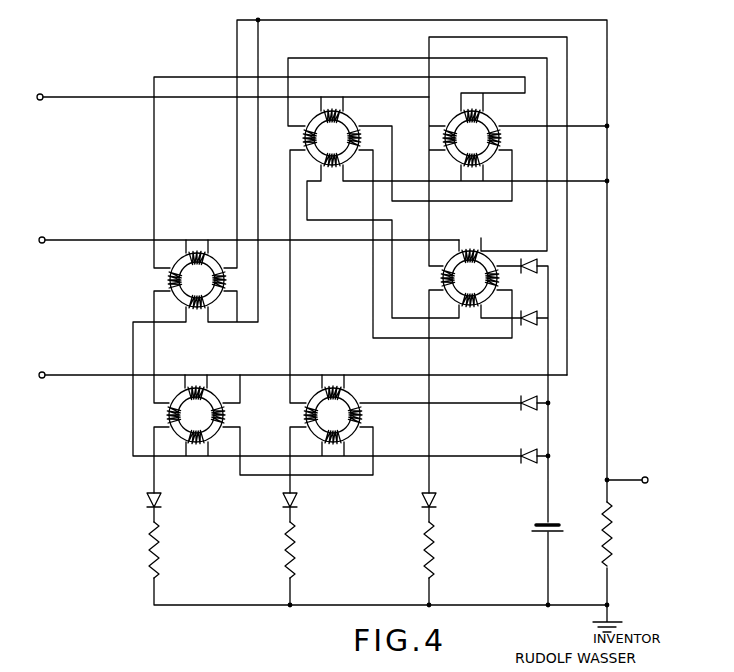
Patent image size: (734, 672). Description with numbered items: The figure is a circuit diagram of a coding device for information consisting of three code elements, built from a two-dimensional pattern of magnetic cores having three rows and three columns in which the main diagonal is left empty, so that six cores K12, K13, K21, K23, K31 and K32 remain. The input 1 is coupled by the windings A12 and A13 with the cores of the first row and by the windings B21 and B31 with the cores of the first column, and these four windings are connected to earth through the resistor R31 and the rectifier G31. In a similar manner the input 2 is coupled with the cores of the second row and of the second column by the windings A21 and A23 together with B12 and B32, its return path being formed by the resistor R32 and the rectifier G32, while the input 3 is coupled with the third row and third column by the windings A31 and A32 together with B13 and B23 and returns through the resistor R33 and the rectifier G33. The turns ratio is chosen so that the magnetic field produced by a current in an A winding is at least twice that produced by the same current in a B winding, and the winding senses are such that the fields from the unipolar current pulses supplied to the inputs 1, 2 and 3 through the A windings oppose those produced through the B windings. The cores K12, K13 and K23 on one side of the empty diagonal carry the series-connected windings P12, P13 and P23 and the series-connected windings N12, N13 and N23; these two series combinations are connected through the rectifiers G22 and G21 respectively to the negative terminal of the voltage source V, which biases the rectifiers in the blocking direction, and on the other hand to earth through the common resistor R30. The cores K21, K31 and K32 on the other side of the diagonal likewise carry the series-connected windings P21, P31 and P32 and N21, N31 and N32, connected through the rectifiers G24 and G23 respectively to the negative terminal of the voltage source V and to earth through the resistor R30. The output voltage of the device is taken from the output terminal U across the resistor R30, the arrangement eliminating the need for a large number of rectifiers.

The input 1 is at (233, 88).
The input 2 is at (247, 230).
The input 3 is at (301, 367).
The output terminal U is at (646, 470).
The voltage source V is at (545, 530).
The core K12 is at (332, 138).
The winding A12 is at (332, 108).
The winding B12 is at (303, 137).
The winding N12 is at (361, 137).
The winding P12 is at (333, 167).
The core K13 is at (472, 138).
The winding A13 is at (472, 108).
The winding B13 is at (443, 137).
The winding N13 is at (501, 137).
The winding P13 is at (473, 167).
The core K21 is at (197, 280).
The winding A21 is at (197, 250).
The winding B21 is at (168, 279).
The winding N21 is at (226, 279).
The winding P21 is at (198, 309).
The core K23 is at (470, 278).
The winding A23 is at (470, 248).
The winding B23 is at (441, 277).
The winding N23 is at (499, 277).
The winding P23 is at (471, 307).
The core K31 is at (196, 415).
The winding A31 is at (196, 385).
The winding B31 is at (167, 414).
The winding N31 is at (225, 414).
The winding P31 is at (197, 444).
The core K32 is at (333, 415).
The winding A32 is at (333, 385).
The winding B32 is at (304, 414).
The winding N32 is at (362, 414).
The winding P32 is at (334, 444).
The rectifier G21 is at (530, 262).
The rectifier G22 is at (530, 325).
The rectifier G23 is at (530, 398).
The rectifier G24 is at (530, 449).
The rectifier G31 is at (162, 503).
The rectifier G32 is at (298, 503).
The rectifier G33 is at (437, 502).
The resistor R31 is at (162, 549).
The resistor R32 is at (297, 549).
The resistor R33 is at (436, 547).
The common resistor R30 is at (613, 533).